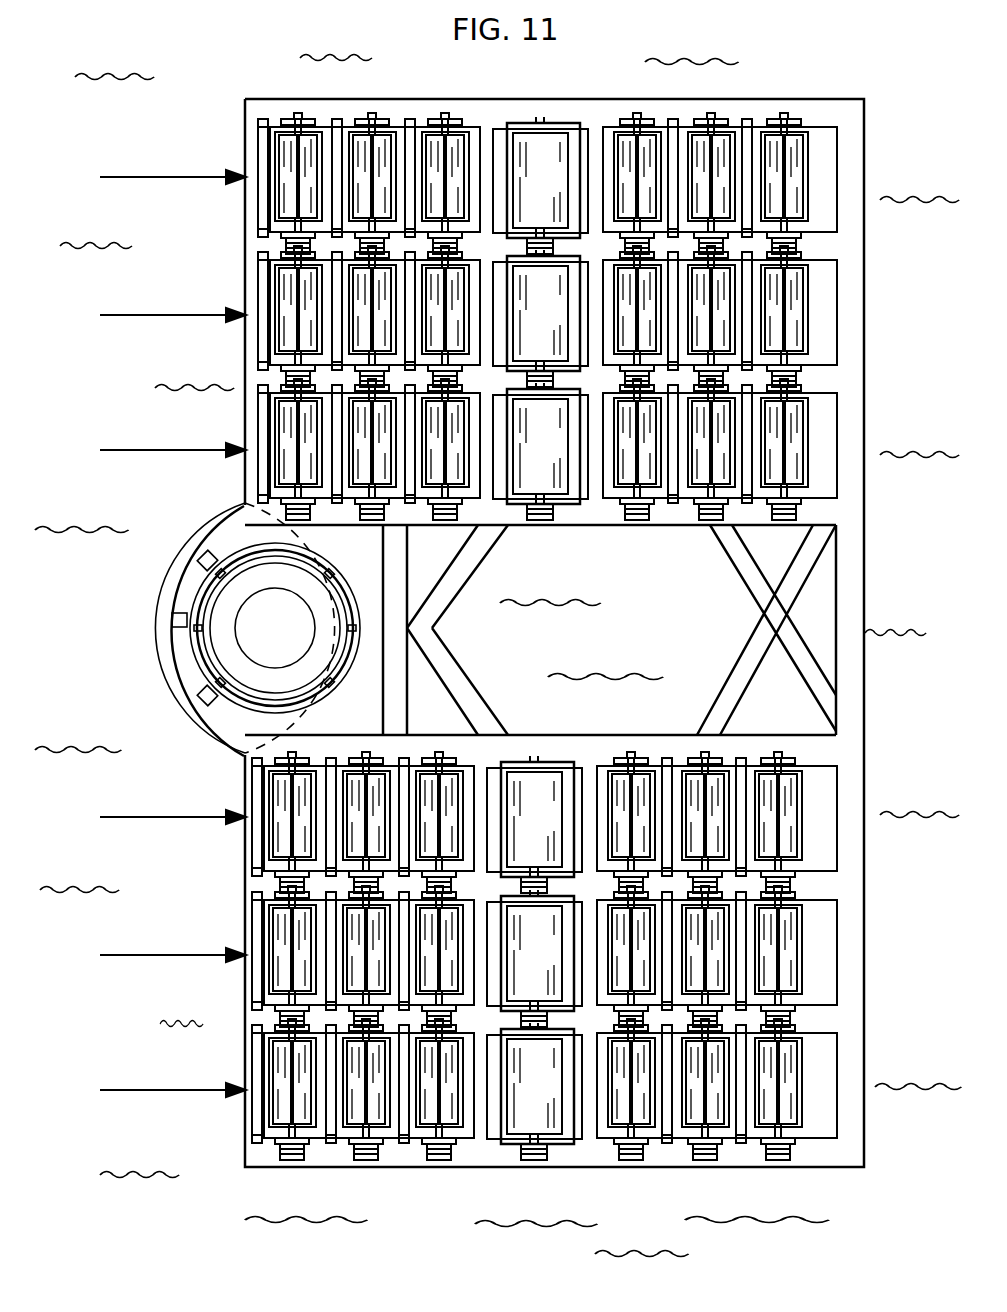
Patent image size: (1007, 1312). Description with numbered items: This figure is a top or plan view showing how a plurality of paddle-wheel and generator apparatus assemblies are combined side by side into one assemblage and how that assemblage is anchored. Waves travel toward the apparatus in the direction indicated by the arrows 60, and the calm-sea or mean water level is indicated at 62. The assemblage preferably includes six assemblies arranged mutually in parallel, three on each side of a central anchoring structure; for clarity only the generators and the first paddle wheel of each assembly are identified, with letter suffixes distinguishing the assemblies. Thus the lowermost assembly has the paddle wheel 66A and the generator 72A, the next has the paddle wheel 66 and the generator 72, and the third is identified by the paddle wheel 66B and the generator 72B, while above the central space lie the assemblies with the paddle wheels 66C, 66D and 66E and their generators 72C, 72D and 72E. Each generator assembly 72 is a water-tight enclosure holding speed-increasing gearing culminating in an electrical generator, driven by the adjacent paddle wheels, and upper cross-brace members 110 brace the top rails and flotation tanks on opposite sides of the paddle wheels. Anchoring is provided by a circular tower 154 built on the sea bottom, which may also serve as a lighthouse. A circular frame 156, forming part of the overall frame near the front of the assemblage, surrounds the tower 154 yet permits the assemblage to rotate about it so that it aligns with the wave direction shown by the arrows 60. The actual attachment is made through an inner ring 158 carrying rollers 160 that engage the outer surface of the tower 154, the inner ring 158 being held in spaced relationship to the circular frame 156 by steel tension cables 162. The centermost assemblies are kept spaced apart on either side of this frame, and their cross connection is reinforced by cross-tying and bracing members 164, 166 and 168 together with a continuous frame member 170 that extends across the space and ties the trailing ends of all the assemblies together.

The arrow indicating wave direction 60 is at (178, 178).
The mean water level 62 is at (122, 56).
The paddle wheel 66 is at (492, 956).
The paddle wheel of assembly A 66A is at (492, 1089).
The paddle wheel of assembly B 66B is at (492, 822).
The paddle wheel of assembly C 66C is at (497, 449).
The paddle wheel of assembly D 66D is at (497, 316).
The paddle wheel of assembly E 66E is at (497, 183).
The generator assembly 72 is at (546, 972).
The generator assembly of assembly A 72A is at (557, 1106).
The generator assembly of assembly B 72B is at (557, 834).
The generator assembly of assembly C 72C is at (560, 465).
The generator assembly of assembly D 72D is at (560, 332).
The generator assembly of assembly E 72E is at (560, 199).
The upper cross-brace member 110 is at (339, 121).
The circular tower 154 is at (240, 550).
The circular frame 156 is at (165, 580).
The inner ring 158 is at (190, 621).
The roller 160 is at (222, 686).
The steel tension cable 162 is at (215, 712).
The cross-tying and bracing member 164 is at (407, 553).
The cross-tying and bracing member 166 is at (437, 663).
The cross-tying and bracing member 168 is at (742, 663).
The continuous frame member 170 is at (852, 601).